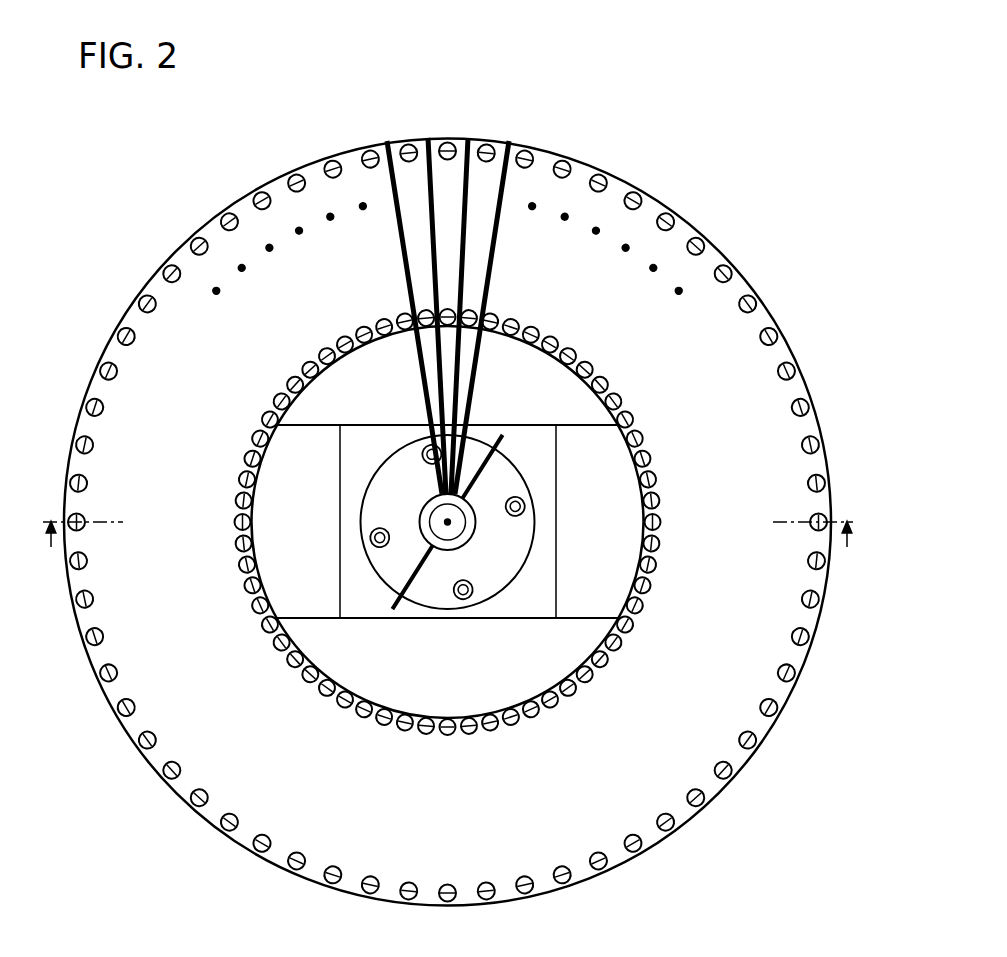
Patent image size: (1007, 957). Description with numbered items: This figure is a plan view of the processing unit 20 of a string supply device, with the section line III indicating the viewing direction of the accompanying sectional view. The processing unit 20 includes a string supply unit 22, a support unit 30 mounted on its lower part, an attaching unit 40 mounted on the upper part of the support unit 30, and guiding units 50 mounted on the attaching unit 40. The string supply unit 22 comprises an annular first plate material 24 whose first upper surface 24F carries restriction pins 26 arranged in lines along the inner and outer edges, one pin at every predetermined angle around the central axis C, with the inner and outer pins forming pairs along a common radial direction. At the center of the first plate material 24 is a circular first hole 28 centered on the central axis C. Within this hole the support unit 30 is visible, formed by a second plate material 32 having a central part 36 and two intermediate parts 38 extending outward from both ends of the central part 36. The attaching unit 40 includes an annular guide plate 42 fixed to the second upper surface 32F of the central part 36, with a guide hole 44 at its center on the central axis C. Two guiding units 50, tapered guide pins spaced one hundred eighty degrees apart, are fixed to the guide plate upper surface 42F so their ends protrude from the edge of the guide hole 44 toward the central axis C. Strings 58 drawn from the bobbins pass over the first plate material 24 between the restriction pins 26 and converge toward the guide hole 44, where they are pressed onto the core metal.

The processing unit 20 is at (758, 73).
The string supply unit 22 is at (607, 86).
The first plate material 24 is at (584, 160).
The first upper surface 24F is at (647, 225).
The restriction pins 26 is at (553, 168).
The first hole 28 is at (323, 668).
The support unit 30 is at (448, 558).
The second plate material 32 is at (405, 619).
The second upper surface 32F is at (523, 603).
The central part 36 is at (463, 619).
The intermediate parts 38 is at (292, 486).
The attaching unit 40 is at (443, 499).
The guide plate 42 is at (389, 476).
The guide plate upper surface 42F is at (473, 452).
The guide hole 44 is at (470, 531).
The guiding units 50 is at (505, 439).
The strings 58 is at (432, 249).
The central axis C is at (446, 521).
The section III view direction III is at (451, 549).